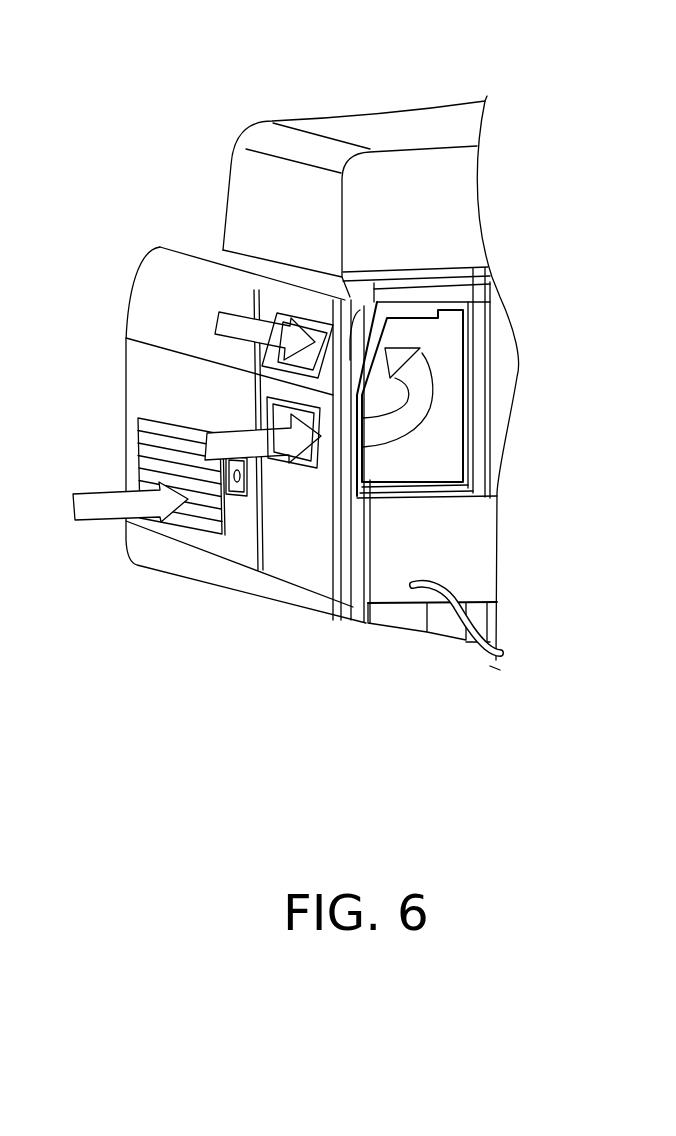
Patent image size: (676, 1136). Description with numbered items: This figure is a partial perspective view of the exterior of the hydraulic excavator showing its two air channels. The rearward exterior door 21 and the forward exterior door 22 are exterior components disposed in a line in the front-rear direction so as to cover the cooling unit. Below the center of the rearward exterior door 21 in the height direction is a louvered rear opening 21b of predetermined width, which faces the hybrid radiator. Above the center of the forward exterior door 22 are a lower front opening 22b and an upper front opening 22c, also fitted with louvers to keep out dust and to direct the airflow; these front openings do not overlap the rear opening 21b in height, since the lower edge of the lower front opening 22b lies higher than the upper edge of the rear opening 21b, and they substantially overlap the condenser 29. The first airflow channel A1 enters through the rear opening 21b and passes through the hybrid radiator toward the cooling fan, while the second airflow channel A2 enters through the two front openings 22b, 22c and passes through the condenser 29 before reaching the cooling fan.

The rearward exterior door 21 is at (153, 283).
The rear opening 21b is at (140, 455).
The forward exterior door 22 is at (313, 563).
The lower front opening 22b is at (268, 427).
The upper front opening 22c is at (298, 312).
The condenser 29 is at (438, 418).
The first airflow channel A1 is at (90, 507).
The second airflow channel A2 is at (232, 440).